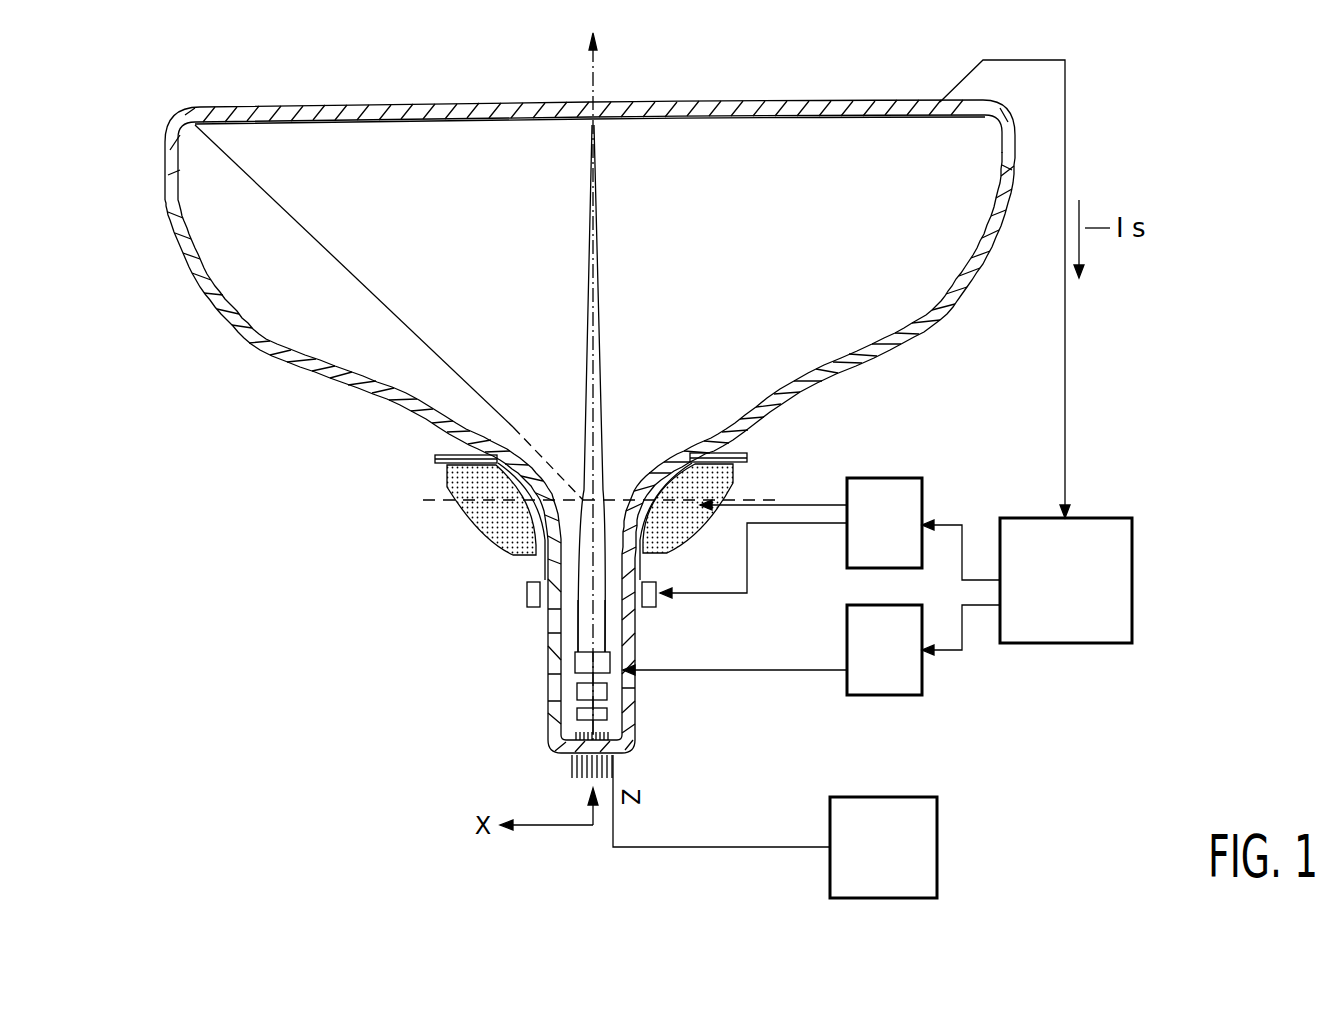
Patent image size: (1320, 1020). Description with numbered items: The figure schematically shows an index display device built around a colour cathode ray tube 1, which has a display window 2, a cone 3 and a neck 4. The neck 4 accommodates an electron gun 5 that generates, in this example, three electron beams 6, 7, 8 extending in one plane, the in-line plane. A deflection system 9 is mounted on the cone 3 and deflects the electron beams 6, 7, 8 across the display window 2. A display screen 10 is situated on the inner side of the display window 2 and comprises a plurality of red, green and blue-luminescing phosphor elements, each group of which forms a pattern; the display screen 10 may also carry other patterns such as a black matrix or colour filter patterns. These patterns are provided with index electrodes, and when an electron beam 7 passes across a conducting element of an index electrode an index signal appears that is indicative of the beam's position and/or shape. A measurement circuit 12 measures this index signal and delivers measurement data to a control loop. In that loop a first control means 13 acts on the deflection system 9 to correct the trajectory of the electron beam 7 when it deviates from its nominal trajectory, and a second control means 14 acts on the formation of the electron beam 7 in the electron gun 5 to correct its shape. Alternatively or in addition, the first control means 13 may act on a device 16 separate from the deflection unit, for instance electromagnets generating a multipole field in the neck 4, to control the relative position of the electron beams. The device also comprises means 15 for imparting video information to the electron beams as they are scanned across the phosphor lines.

The colour cathode ray tube 1 is at (163, 120).
The display window 2 is at (748, 104).
The cone 3 is at (870, 368).
The neck 4 is at (632, 700).
The electron gun 5 is at (582, 663).
The electron beam 6 is at (585, 345).
The electron beam 7 is at (590, 386).
The electron beam 8 is at (597, 418).
The deflection system 9 is at (680, 540).
The display screen 10 is at (698, 104).
The measurement circuit 12 is at (1027, 357).
The first control means 13 is at (791, 538).
The second control means 14 is at (772, 650).
The means for imparting video information 15 is at (775, 826).
The device 16 is at (527, 592).